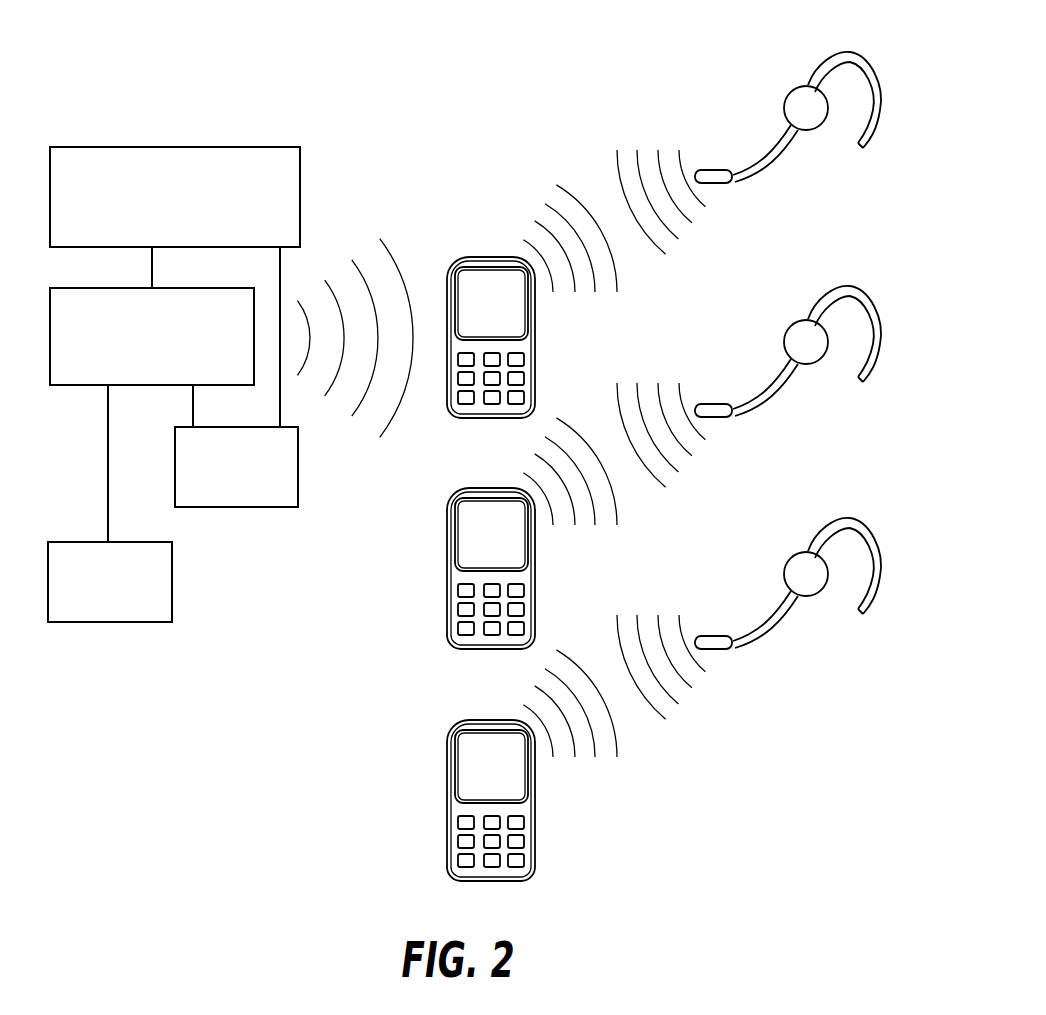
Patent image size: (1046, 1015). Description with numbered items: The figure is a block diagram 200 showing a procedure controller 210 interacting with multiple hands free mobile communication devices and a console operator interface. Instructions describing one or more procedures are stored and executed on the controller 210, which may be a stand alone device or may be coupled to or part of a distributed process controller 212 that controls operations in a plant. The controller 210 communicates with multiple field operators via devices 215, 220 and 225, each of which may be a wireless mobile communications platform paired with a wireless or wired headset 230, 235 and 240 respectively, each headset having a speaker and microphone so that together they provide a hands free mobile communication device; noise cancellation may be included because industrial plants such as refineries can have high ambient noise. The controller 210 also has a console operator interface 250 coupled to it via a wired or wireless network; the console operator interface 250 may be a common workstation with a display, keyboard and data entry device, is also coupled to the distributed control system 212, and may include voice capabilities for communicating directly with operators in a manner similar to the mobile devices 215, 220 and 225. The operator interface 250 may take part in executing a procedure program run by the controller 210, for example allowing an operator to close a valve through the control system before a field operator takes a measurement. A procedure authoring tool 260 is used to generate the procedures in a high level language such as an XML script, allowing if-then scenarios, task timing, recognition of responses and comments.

The block diagram 200 is at (119, 34).
The controller 210 is at (108, 288).
The distributed process controller 212 is at (173, 147).
The device 215 is at (535, 336).
The device 220 is at (535, 568).
The device 225 is at (535, 800).
The headset 230 is at (786, 101).
The headset 235 is at (786, 335).
The headset 240 is at (786, 567).
The console operator interface 250 is at (175, 466).
The procedure authoring tool 260 is at (85, 542).